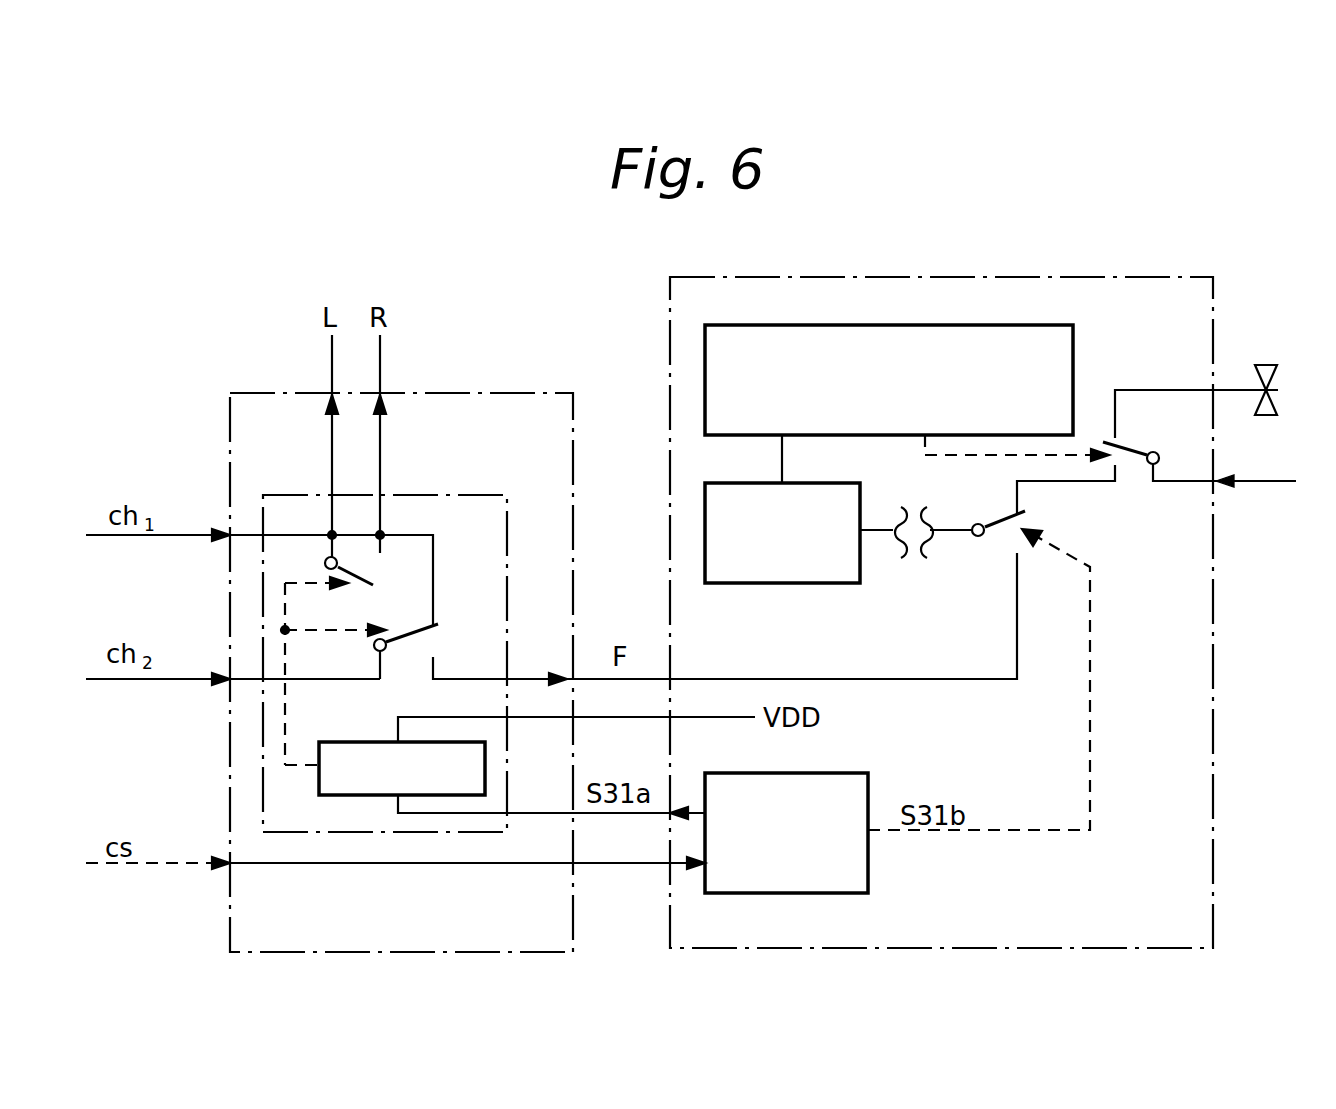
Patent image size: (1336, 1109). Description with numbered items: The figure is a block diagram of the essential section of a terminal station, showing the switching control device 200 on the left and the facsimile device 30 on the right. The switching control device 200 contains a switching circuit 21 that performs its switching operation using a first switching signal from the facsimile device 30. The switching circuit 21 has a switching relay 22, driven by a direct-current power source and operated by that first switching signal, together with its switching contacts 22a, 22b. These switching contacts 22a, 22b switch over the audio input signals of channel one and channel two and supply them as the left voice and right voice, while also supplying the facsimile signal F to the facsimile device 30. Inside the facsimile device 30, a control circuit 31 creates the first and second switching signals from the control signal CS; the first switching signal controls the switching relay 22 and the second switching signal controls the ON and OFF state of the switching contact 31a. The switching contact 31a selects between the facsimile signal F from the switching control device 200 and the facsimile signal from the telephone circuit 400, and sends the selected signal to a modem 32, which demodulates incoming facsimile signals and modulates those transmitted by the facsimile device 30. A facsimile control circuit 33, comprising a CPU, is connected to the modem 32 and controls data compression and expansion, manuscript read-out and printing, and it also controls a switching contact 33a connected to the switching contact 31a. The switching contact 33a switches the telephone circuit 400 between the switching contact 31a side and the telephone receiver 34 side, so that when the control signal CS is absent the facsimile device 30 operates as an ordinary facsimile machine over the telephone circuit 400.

The switching control device 200 is at (485, 392).
The switching circuit 21 is at (434, 495).
The switching relay 22 is at (344, 742).
The switching contact 22a is at (352, 566).
The switching contact 22b is at (413, 639).
The facsimile device 30 is at (984, 277).
The control circuit 31 is at (870, 773).
The switching contact 31a is at (1022, 523).
The modem 32 is at (800, 583).
The facsimile control circuit 33 is at (1075, 351).
The switching contact 33a is at (1124, 444).
The telephone receiver 34 is at (1265, 363).
The telephone circuit 400 is at (1252, 481).